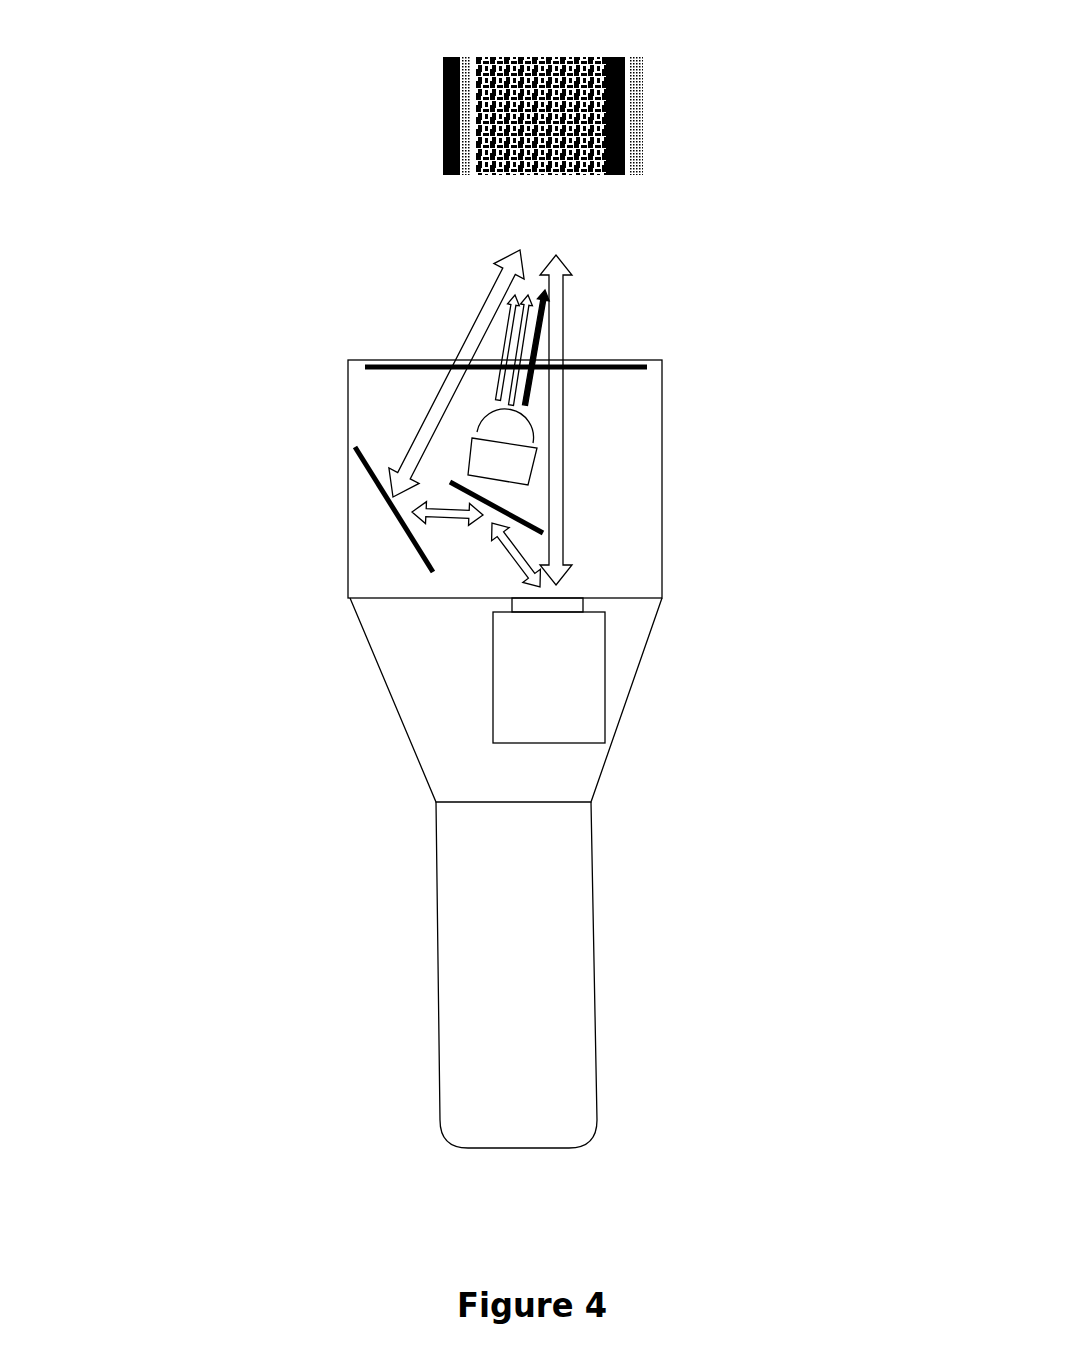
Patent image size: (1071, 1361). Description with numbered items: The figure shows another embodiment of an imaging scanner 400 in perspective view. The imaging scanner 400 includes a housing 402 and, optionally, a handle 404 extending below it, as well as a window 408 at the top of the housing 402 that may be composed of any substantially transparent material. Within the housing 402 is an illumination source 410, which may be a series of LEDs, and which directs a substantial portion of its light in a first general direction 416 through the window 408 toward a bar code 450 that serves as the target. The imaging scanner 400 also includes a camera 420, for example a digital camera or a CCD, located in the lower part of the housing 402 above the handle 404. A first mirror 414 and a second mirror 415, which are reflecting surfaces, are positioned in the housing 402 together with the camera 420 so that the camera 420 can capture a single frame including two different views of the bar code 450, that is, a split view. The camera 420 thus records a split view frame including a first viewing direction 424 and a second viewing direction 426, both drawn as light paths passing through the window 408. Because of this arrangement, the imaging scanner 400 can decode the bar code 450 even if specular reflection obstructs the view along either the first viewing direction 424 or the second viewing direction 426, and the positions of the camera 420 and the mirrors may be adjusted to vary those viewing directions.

The imaging scanner 400 is at (212, 222).
The housing 402 is at (367, 640).
The handle 404 is at (440, 1052).
The window 408 is at (625, 365).
The illumination source 410 is at (537, 465).
The first mirror 414 is at (543, 533).
The second mirror 415 is at (357, 508).
The first general direction 416 is at (508, 322).
The camera 420 is at (605, 675).
The first viewing direction 424 is at (566, 320).
The second viewing direction 426 is at (443, 390).
The bar code 450 is at (642, 63).